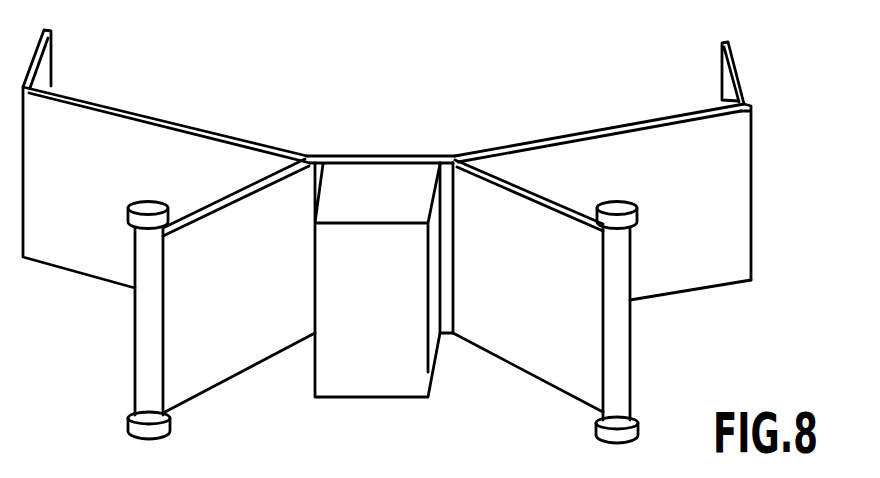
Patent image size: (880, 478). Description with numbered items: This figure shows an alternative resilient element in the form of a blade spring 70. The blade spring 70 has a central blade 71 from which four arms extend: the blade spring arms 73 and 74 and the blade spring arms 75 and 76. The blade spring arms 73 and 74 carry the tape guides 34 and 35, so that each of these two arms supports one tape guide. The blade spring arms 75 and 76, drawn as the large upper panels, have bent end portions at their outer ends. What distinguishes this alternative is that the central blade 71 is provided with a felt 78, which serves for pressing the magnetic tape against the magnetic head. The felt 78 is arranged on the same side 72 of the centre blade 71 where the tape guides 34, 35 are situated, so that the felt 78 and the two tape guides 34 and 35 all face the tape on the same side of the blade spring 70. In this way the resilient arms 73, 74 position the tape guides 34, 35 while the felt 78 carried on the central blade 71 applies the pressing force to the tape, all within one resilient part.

The blade spring 70 is at (420, 221).
The central blade 71 is at (382, 158).
The side of the centre blade 72 is at (447, 252).
The blade spring arm 73 is at (225, 356).
The blade spring arm 74 is at (522, 348).
The blade spring arm 75 is at (98, 133).
The blade spring arm 76 is at (651, 153).
The felt 78 is at (373, 388).
The tape guide 34 is at (155, 370).
The tape guide 35 is at (620, 387).